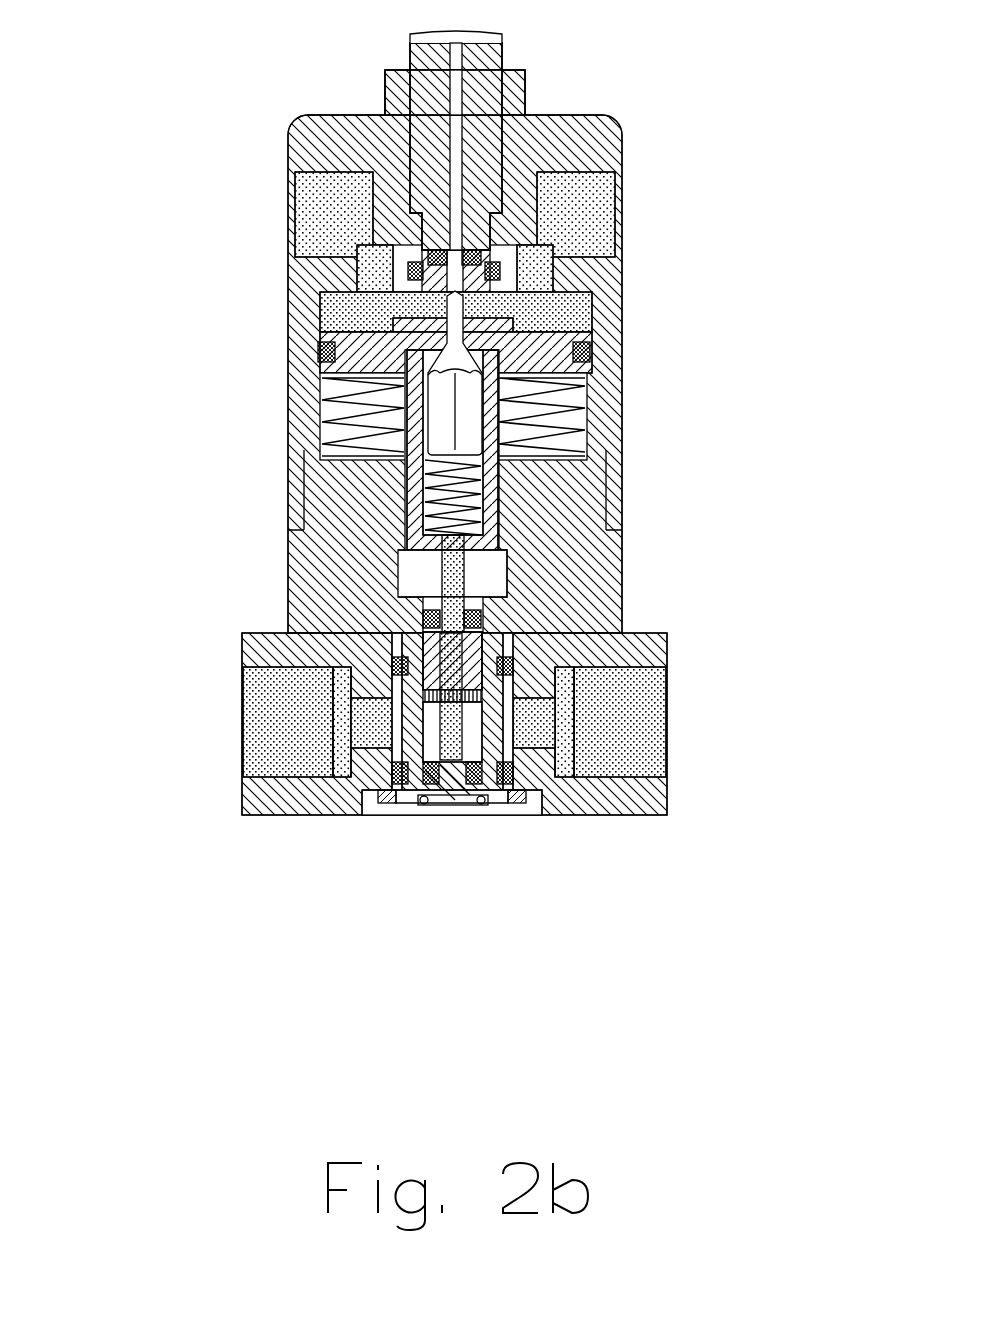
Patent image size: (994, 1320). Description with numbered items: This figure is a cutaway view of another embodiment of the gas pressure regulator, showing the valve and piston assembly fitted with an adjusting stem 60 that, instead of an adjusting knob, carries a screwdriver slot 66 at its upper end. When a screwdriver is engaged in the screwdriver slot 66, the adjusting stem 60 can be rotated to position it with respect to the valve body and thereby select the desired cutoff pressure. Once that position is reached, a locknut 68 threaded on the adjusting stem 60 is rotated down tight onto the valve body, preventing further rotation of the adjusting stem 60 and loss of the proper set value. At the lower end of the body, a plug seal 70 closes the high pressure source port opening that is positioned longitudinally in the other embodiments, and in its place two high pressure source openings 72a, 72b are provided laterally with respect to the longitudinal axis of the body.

The adjusting stem 60 is at (497, 168).
The screwdriver slot 66 is at (440, 42).
The locknut 68 is at (527, 111).
The plug seal 70 is at (452, 787).
The high pressure source opening 72a is at (322, 730).
The high pressure source opening 72b is at (593, 728).